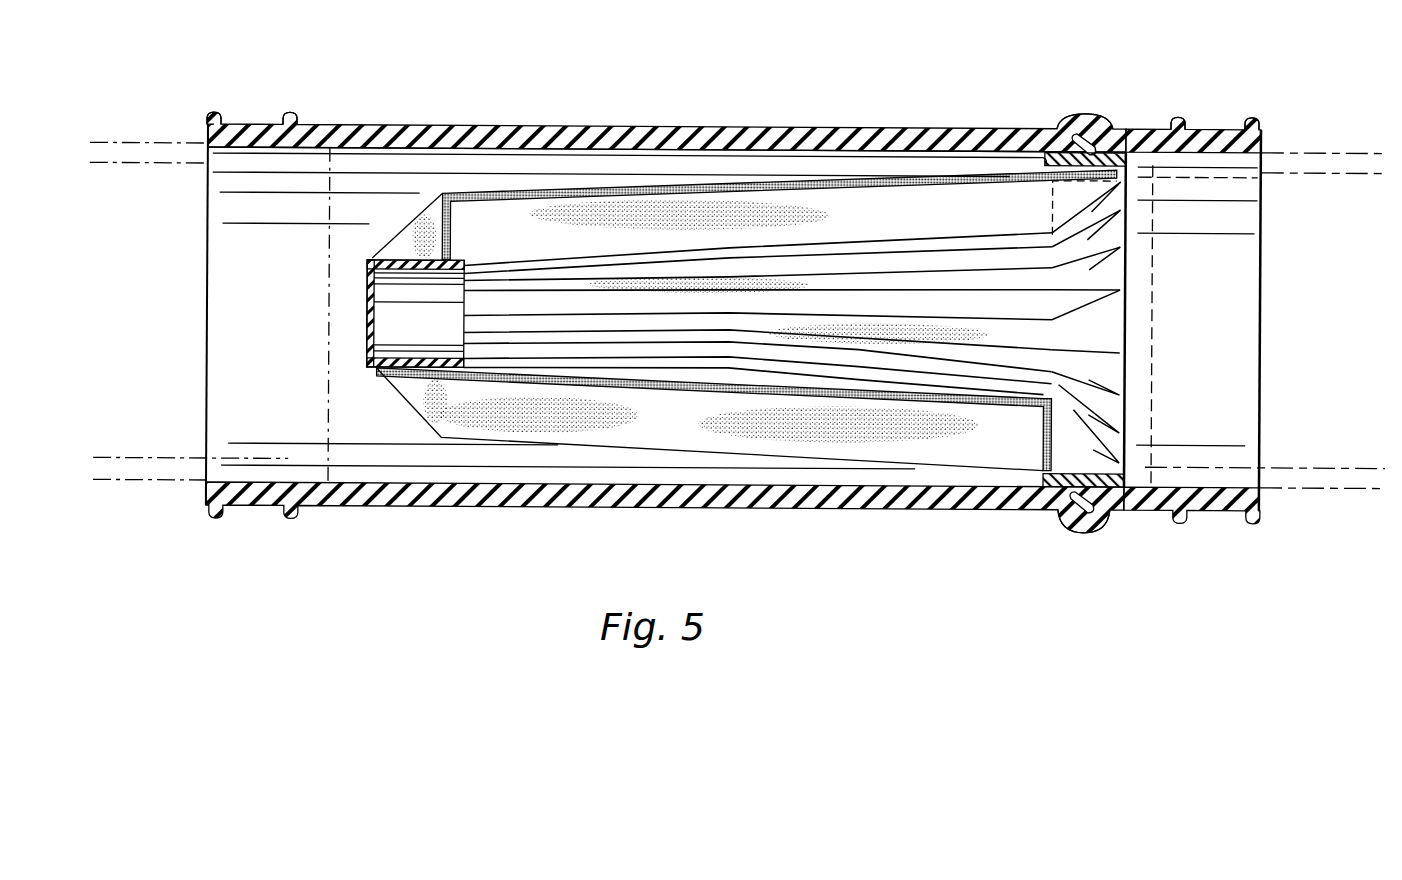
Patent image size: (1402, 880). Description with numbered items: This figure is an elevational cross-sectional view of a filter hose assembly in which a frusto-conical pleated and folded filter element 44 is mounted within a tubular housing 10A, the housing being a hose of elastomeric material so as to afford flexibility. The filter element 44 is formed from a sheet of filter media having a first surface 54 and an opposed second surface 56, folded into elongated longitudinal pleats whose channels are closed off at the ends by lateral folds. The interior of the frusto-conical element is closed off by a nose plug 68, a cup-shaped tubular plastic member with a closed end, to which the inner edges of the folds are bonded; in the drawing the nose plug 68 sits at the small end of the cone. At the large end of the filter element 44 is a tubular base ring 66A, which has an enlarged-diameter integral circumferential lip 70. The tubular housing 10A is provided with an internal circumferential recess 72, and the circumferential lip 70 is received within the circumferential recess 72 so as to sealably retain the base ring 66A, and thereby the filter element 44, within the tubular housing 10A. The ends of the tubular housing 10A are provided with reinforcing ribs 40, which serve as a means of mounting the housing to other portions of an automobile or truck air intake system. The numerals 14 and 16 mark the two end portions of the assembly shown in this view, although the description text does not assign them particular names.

The tubular housing 10A is at (675, 122).
The first tube 14 is at (207, 222).
The second tube 16 is at (1262, 396).
The reinforcing ribs 40 is at (213, 112).
The frusto-conical filter element 44 is at (524, 156).
The first surface 54 is at (849, 174).
The second surface 56 is at (761, 200).
The base ring 66A is at (1118, 147).
The nose plug 68 is at (368, 327).
The circumferential lip 70 is at (1083, 136).
The circumferential recess 72 is at (1110, 520).